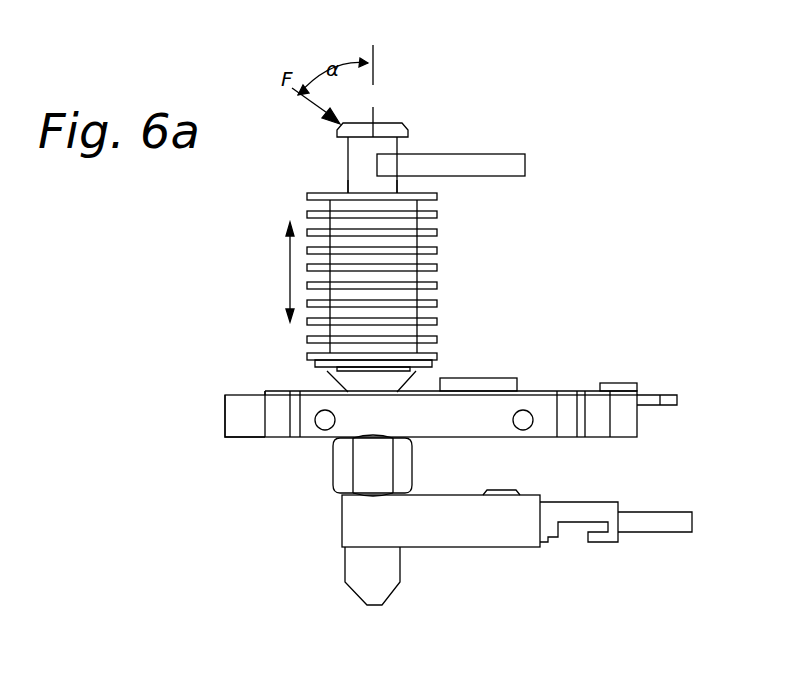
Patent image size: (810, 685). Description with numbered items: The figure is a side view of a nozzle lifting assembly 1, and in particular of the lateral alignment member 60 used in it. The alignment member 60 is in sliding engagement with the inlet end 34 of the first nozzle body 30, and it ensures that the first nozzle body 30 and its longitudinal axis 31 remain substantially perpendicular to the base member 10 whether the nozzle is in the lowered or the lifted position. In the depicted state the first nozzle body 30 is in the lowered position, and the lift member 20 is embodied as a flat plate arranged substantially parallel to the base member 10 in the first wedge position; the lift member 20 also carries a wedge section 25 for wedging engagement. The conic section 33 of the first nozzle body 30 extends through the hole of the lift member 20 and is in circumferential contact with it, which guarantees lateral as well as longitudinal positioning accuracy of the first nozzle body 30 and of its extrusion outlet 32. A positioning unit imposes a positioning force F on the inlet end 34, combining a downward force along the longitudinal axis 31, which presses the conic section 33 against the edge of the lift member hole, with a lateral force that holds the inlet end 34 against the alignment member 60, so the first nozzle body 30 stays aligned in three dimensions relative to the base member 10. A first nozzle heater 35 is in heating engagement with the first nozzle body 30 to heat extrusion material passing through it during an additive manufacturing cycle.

The nozzle lifting assembly 1 is at (568, 254).
The base member 10 is at (228, 420).
The lift member 20 is at (558, 392).
The wedge section 25 is at (490, 389).
The first nozzle body 30 is at (437, 250).
The longitudinal axis 31 is at (373, 90).
The extrusion outlet 32 is at (368, 601).
The conic section 33 is at (346, 378).
The inlet end 34 is at (346, 178).
The first nozzle heater 35 is at (493, 537).
The lateral alignment member 60 is at (473, 160).